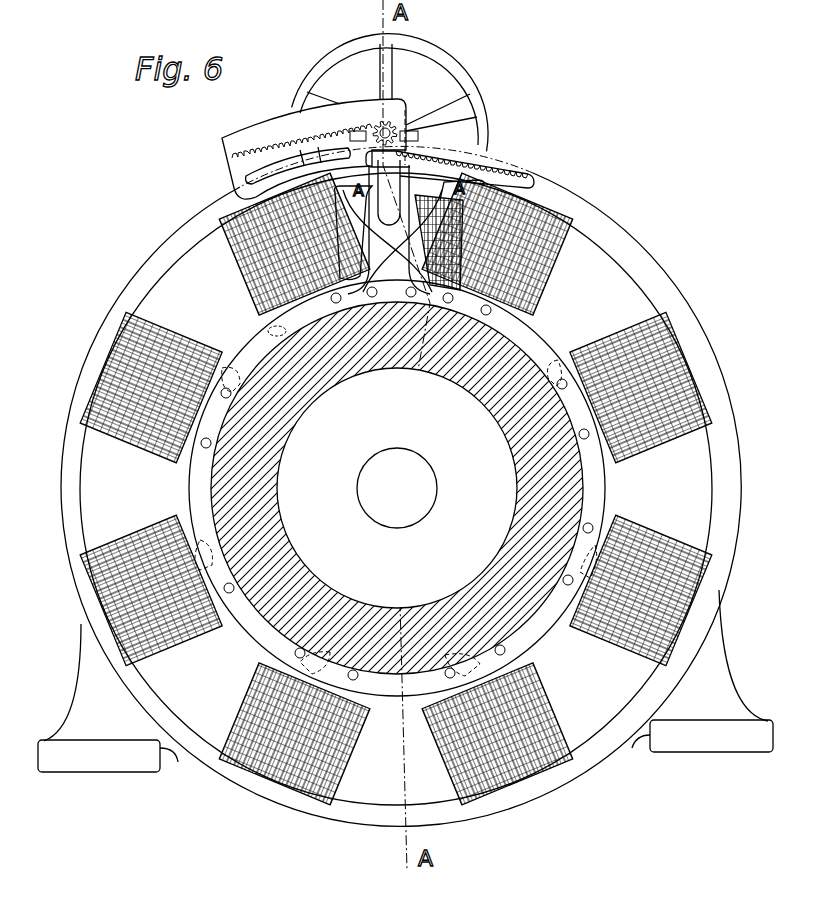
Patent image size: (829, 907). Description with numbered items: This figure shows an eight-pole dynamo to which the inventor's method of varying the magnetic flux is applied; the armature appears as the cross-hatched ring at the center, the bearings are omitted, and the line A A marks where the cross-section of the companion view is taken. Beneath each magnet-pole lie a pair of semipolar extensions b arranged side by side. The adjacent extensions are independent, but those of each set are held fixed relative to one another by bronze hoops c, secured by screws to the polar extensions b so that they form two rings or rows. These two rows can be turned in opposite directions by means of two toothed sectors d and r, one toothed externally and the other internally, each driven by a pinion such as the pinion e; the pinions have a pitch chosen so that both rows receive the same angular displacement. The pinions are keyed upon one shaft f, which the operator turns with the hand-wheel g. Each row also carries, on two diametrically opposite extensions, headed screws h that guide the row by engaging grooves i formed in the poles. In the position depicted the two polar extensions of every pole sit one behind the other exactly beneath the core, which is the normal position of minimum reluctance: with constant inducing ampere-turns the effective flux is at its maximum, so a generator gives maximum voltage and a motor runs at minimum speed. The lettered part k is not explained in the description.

The section line A A is at (397, 488).
The semipolar extensions b is at (500, 308).
The hoops c is at (596, 489).
The toothed sector d is at (486, 168).
The pinion e is at (403, 135).
The shaft f is at (393, 122).
The hand-wheel g is at (303, 98).
The headed screws h is at (266, 331).
The grooves i is at (196, 514).
The brush holder k is at (442, 700).
The toothed sector r is at (240, 150).